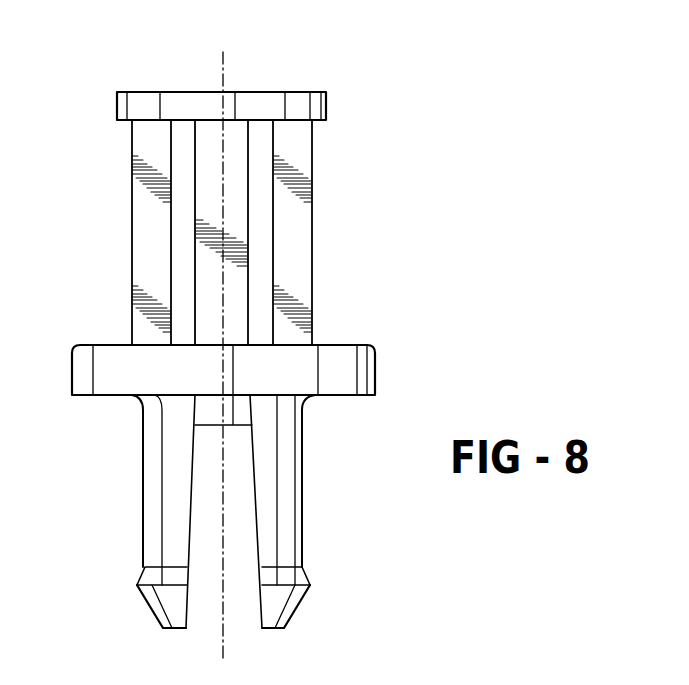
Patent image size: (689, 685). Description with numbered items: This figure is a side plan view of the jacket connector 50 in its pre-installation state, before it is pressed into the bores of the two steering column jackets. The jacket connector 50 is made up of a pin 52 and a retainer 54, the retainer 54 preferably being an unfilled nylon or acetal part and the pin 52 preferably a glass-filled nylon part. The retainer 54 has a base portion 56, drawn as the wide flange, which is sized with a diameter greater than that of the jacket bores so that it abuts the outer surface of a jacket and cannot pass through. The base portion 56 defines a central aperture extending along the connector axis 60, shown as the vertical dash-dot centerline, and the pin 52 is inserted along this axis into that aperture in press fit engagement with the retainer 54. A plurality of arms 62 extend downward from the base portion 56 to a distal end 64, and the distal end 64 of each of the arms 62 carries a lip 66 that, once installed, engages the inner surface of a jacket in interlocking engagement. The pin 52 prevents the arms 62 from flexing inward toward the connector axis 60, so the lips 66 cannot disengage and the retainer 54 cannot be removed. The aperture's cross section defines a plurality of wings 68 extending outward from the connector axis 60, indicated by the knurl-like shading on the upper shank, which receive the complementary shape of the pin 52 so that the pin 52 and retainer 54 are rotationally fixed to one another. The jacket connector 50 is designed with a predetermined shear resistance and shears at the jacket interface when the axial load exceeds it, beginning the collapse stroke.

The jacket connector 50 is at (354, 72).
The pin 52 is at (263, 141).
The retainer 54 is at (333, 353).
The base portion 56 is at (375, 373).
The connector axis 60 is at (223, 73).
The arms 62 is at (155, 477).
The distal end 64 is at (175, 630).
The lip 66 is at (140, 593).
The wings 68 is at (145, 258).